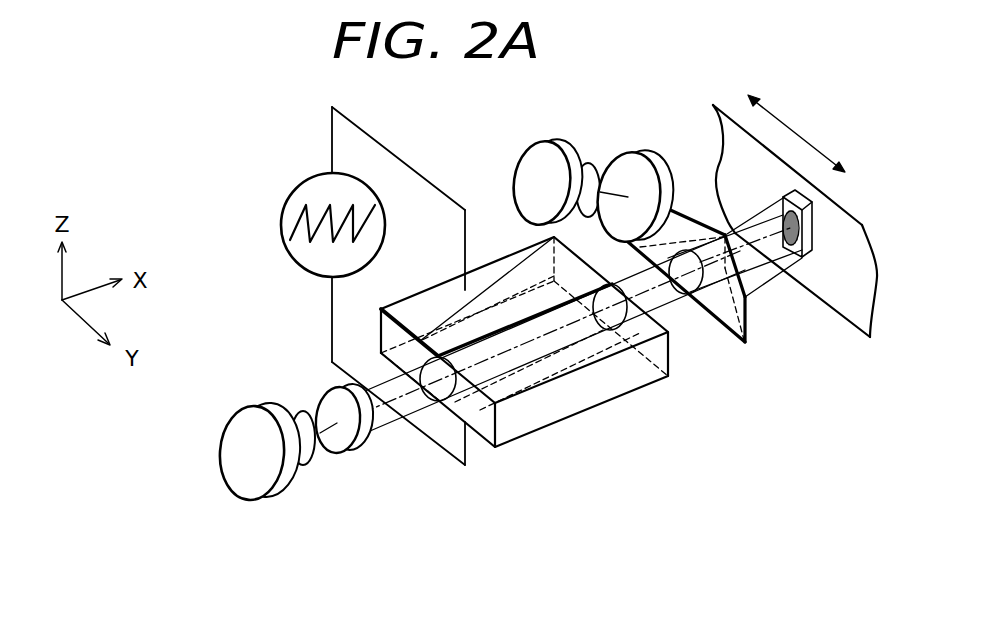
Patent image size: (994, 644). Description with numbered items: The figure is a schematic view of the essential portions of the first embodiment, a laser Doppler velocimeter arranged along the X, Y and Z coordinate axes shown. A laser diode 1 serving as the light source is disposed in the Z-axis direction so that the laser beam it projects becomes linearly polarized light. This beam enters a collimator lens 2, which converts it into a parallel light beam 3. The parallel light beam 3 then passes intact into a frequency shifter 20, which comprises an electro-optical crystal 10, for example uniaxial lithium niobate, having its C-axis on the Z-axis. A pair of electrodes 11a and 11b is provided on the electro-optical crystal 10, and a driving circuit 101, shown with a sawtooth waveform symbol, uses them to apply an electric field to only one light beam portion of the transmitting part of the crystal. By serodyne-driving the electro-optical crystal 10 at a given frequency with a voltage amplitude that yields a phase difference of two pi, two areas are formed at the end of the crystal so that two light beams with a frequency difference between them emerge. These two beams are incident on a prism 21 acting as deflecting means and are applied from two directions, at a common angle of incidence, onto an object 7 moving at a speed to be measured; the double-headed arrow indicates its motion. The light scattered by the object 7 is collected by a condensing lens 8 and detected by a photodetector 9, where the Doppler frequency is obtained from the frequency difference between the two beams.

The laser diode 1 is at (238, 427).
The collimator lens 2 is at (327, 400).
The parallel light beam 3 is at (392, 423).
The object to be measured 7 is at (840, 292).
The condensing lens 8 is at (628, 162).
The photodetector 9 is at (541, 153).
The electro-optical crystal 10 is at (524, 363).
The frequency shifter 20 is at (597, 390).
The electrode 11a is at (450, 296).
The electrode 11b is at (383, 362).
The prism 21 is at (723, 312).
The driving circuit 101 is at (289, 196).